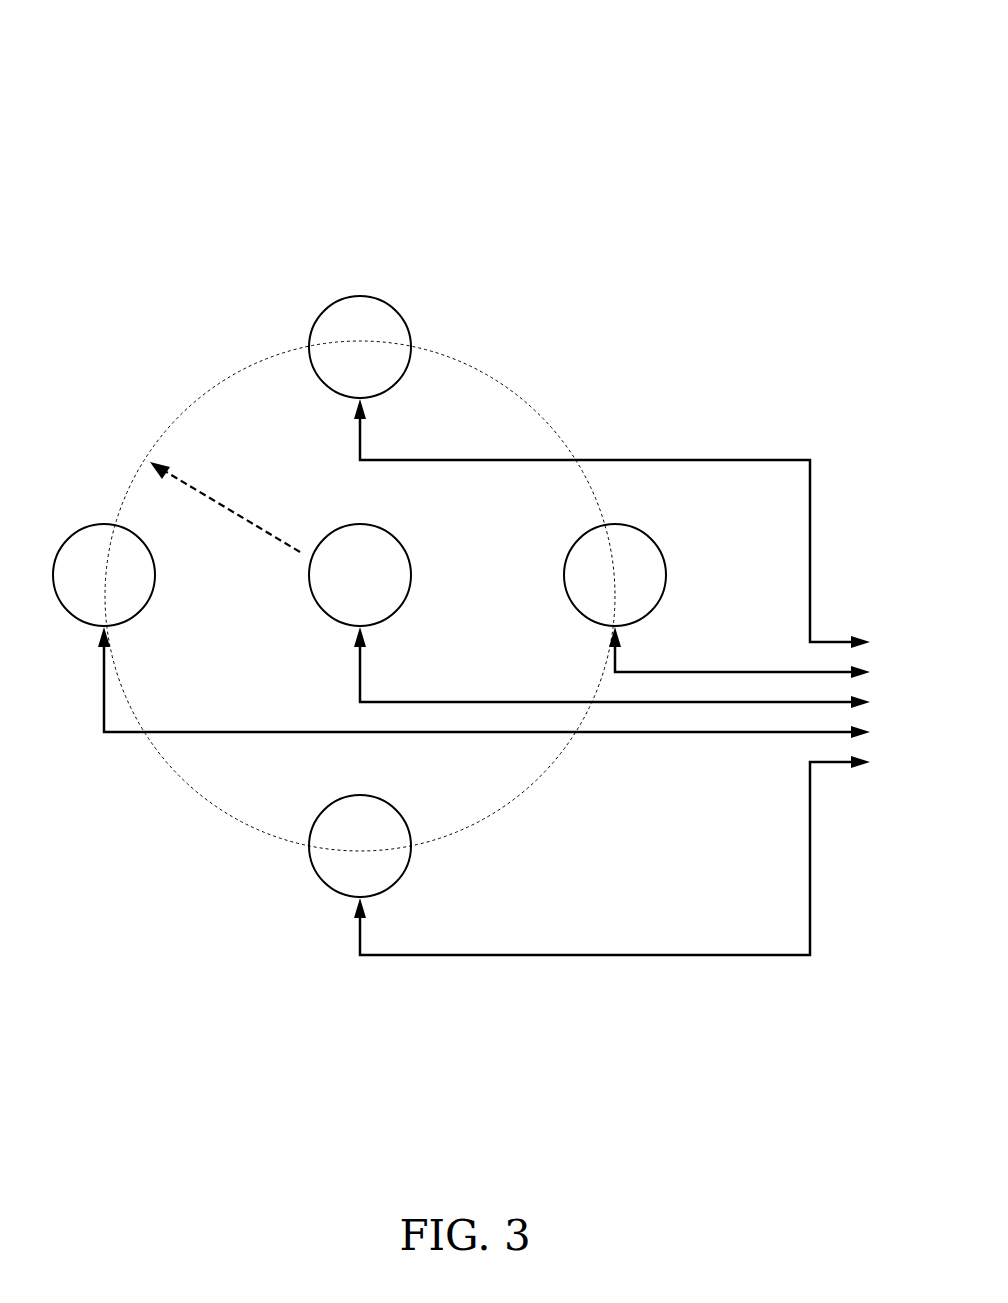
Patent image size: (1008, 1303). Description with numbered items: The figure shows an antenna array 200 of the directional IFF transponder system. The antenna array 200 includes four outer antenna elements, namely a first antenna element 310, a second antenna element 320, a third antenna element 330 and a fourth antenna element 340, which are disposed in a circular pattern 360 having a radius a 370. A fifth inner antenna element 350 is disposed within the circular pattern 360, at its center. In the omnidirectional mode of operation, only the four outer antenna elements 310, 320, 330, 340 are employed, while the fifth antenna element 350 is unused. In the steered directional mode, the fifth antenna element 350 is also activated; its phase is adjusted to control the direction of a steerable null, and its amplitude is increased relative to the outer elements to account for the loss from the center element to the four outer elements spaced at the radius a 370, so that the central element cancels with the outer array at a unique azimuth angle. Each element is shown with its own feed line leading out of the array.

The antenna array 200 is at (470, 63).
The antenna element E1 310 is at (342, 366).
The antenna element E2 320 is at (597, 594).
The antenna element E3 330 is at (342, 865).
The antenna element E4 340 is at (86, 594).
The antenna element E5 350 is at (342, 594).
The circular pattern 360 is at (210, 368).
The radius a 370 is at (238, 506).